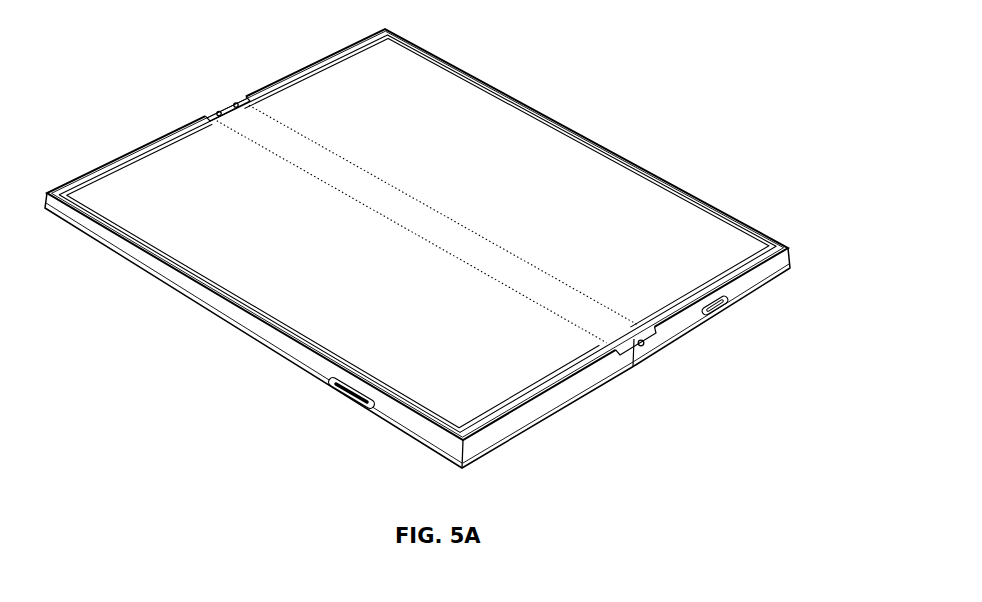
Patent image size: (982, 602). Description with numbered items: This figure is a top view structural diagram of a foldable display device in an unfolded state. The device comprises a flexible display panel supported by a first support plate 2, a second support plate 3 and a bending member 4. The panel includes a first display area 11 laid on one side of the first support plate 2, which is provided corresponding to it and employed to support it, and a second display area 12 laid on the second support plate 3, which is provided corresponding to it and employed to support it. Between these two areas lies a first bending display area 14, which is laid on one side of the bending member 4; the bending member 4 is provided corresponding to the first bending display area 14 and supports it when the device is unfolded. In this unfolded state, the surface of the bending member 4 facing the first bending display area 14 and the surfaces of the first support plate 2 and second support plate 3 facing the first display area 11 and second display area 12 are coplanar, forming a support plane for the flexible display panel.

The first support plate 2 is at (543, 410).
The second support plate 3 is at (752, 285).
The bending member 4 is at (642, 342).
The first display area 11 is at (280, 285).
The second display area 12 is at (473, 132).
The first bending display area 14 is at (265, 143).